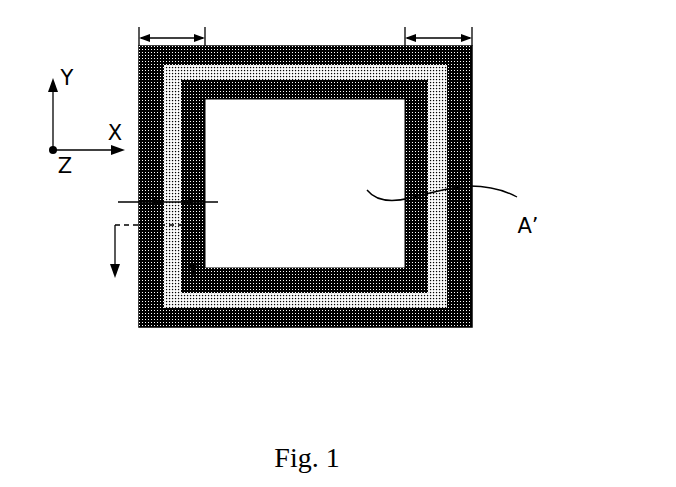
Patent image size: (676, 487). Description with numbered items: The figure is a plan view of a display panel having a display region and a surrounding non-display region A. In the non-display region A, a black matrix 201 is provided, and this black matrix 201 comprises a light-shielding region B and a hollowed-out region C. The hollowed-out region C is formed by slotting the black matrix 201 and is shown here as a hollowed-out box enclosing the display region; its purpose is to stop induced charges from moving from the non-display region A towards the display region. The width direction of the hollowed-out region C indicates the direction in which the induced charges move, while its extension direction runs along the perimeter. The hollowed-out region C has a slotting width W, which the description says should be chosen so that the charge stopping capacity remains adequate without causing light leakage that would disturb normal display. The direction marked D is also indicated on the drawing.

The black matrix 201 is at (367, 366).
The light-shielding region B is at (373, 283).
The hollowed-out region C is at (438, 288).
The non-display region A is at (305, 24).
The slotting width W is at (162, 191).
The direction along band D is at (161, 268).